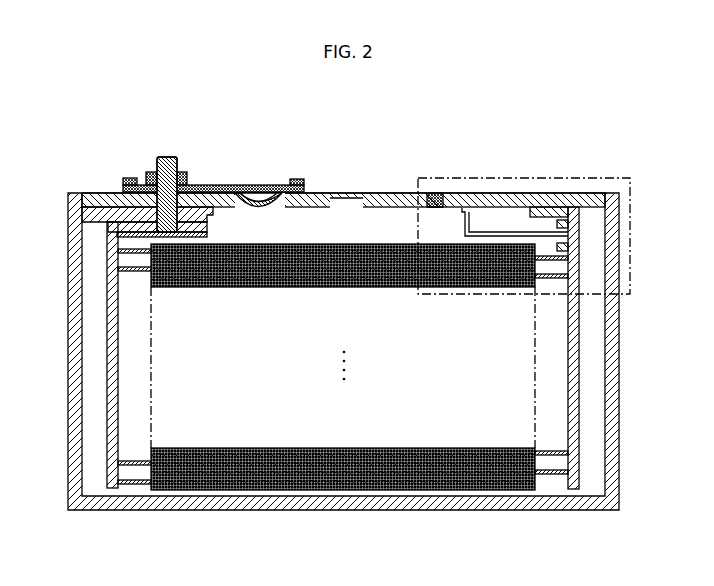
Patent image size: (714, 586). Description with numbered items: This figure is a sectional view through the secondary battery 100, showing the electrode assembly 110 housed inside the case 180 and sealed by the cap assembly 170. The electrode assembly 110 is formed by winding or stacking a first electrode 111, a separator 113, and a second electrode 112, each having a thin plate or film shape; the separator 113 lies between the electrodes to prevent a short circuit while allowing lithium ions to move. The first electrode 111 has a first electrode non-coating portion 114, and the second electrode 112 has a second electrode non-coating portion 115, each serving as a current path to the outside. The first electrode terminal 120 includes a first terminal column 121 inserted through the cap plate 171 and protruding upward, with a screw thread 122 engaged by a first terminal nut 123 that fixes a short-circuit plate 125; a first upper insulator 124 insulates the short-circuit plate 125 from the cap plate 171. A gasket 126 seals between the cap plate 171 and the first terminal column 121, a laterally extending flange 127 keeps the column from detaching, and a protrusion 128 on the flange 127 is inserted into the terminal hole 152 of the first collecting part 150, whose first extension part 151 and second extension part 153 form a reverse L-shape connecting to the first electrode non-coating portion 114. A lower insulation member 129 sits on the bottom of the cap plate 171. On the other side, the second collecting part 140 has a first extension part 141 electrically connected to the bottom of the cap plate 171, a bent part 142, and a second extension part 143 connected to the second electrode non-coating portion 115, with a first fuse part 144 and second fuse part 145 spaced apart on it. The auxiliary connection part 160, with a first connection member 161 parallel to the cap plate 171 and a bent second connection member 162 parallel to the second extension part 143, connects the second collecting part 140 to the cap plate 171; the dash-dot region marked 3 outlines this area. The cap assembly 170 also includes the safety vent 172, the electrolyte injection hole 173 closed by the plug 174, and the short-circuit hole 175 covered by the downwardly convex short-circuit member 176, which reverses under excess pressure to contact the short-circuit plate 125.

The secondary battery 100 is at (667, 101).
The electrode assembly 110 is at (337, 389).
The first electrode 111 is at (243, 491).
The second electrode 112 is at (474, 491).
The separator 113 is at (355, 489).
The first electrode non-coating portion 114 is at (134, 492).
The second electrode non-coating portion 115 is at (551, 489).
The first electrode terminal 120 is at (158, 167).
The first terminal column 121 is at (167, 156).
The screw thread 122 is at (153, 172).
The first terminal nut 123 is at (182, 172).
The first upper insulator 124 is at (297, 179).
The short-circuit plate 125 is at (222, 185).
The gasket 126 is at (124, 179).
The flange 127 is at (110, 203).
The protrusion 128 is at (173, 235).
The lower insulation member 129 is at (80, 216).
The second collecting part 140 is at (617, 333).
The first extension part 141 is at (565, 195).
The bent part 142 is at (597, 199).
The second extension part 143 is at (577, 372).
The first fuse part 144 is at (575, 225).
The second fuse part 145 is at (575, 249).
The first collecting part 150 is at (80, 357).
The first extension part 151 is at (118, 249).
The terminal hole 152 is at (148, 260).
The second extension part 153 is at (109, 386).
The auxiliary connection part 160 is at (495, 282).
The first connection member 161 is at (485, 237).
The second connection member 162 is at (465, 228).
The cap assembly 170 is at (343, 188).
The cap plate 171 is at (318, 192).
The safety vent 172 is at (361, 192).
The electrolyte injection hole 173 is at (432, 209).
The plug 174 is at (431, 192).
The short-circuit hole 175 is at (278, 208).
The short-circuit member 176 is at (256, 194).
The case 180 is at (613, 413).
The enlarged region 3 is at (538, 178).